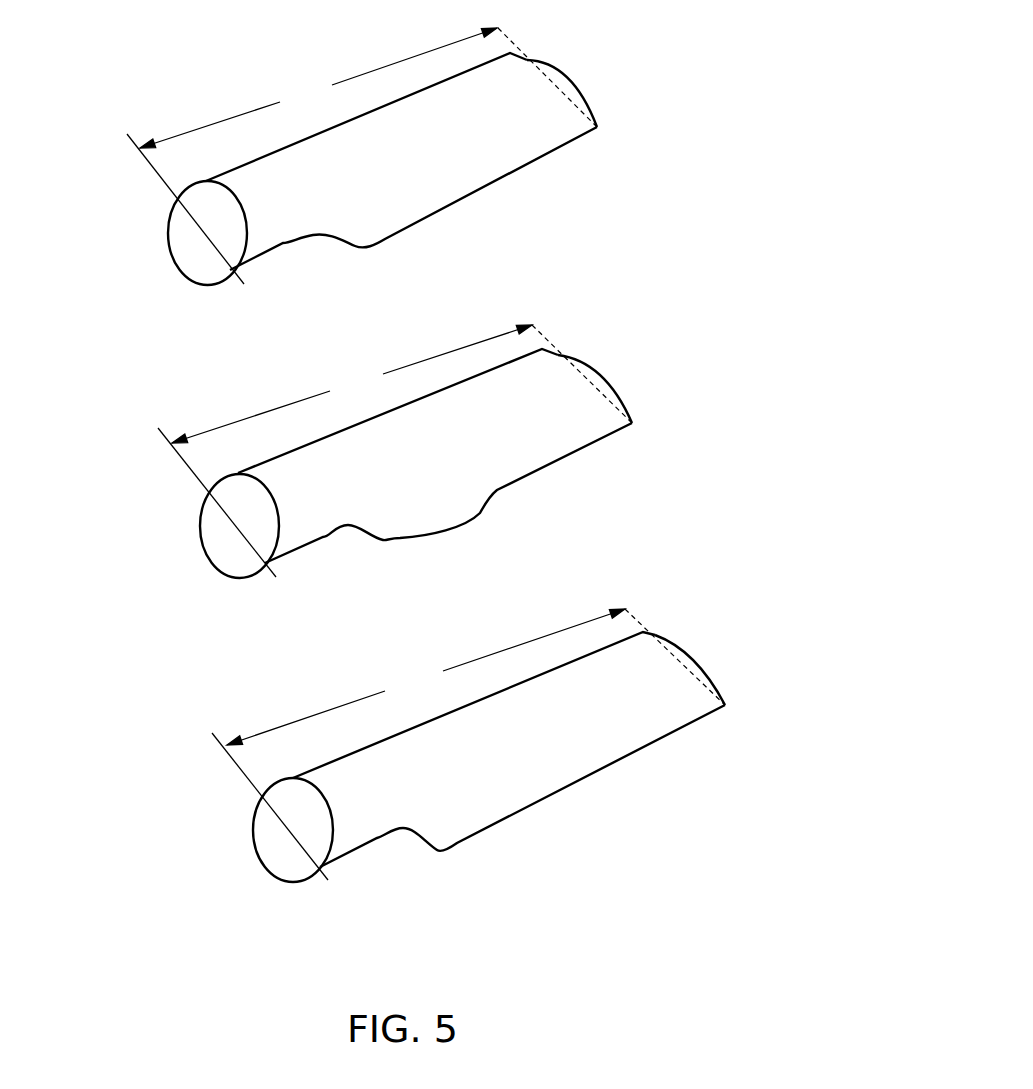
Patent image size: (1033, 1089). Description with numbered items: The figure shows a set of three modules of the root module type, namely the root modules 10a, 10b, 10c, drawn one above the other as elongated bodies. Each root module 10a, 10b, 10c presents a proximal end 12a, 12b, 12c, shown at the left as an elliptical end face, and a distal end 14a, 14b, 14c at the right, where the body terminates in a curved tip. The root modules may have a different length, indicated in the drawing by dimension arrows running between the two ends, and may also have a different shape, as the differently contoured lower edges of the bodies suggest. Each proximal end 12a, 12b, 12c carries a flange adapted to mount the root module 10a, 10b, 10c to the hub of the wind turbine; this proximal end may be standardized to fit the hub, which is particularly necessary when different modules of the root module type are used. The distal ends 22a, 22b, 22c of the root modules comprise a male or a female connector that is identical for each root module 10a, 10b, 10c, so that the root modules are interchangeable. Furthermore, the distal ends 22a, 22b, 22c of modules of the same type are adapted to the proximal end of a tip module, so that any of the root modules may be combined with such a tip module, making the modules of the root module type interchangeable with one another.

The root module 10a is at (440, 183).
The proximal end 12a is at (180, 235).
The distal end 14a is at (543, 97).
The distal end 22a is at (393, 143).
The root module 10b is at (487, 475).
The proximal end 12b is at (207, 532).
The distal end 14b is at (567, 393).
The distal end 22b is at (433, 433).
The root module 10c is at (528, 783).
The proximal end 12c is at (268, 837).
The distal end 14c is at (665, 677).
The distal end 22c is at (491, 725).